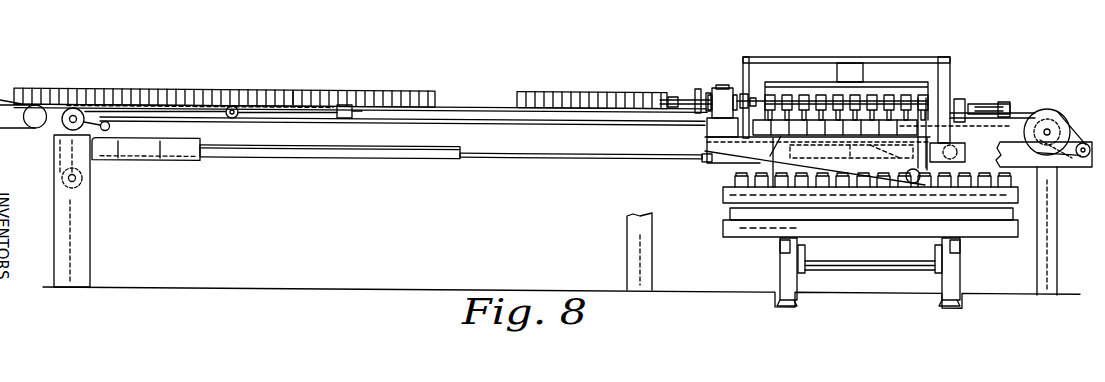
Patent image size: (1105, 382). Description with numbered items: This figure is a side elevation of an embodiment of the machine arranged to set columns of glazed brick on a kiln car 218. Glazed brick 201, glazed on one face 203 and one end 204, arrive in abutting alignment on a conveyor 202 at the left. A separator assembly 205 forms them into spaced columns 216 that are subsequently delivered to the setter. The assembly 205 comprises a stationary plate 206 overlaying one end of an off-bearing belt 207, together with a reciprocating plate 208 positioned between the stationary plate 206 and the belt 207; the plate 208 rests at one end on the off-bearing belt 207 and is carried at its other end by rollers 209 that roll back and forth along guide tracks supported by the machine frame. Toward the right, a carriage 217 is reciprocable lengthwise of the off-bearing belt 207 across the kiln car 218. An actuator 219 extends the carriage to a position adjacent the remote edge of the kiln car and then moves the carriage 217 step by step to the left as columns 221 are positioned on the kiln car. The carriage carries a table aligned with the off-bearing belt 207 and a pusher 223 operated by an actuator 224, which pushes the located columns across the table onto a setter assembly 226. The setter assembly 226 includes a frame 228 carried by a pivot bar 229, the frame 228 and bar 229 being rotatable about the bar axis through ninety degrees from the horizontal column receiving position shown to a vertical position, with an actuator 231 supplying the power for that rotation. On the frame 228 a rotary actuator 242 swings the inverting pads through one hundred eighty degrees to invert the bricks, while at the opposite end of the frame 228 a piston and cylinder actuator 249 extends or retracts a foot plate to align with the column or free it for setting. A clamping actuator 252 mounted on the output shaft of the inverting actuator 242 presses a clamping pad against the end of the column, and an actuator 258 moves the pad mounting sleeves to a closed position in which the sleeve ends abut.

The glazed brick 201 is at (147, 84).
The conveyor 202 is at (25, 132).
The glazed face 203 is at (294, 88).
The glazed end 204 is at (233, 101).
The separator assembly 205 is at (187, 101).
The stationary plate 206 is at (58, 104).
The off-bearing belt 207 is at (483, 105).
The reciprocating plate 208 is at (340, 105).
The rollers 209 is at (236, 117).
The spaced columns 216 is at (587, 92).
The carriage 217 is at (890, 53).
The kiln car 218 is at (753, 229).
The actuator 219 is at (357, 157).
The columns 221 is at (735, 183).
The pusher 223 is at (775, 86).
The actuator 224 is at (836, 87).
The setter assembly 226 is at (944, 92).
The frame 228 is at (703, 147).
The pivot bar 229 is at (915, 193).
The actuator 231 is at (852, 163).
The rotary actuator 242 is at (722, 87).
The piston and cylinder actuator 249 is at (930, 156).
The clamping actuator 252 is at (688, 97).
The actuator 258 is at (780, 138).